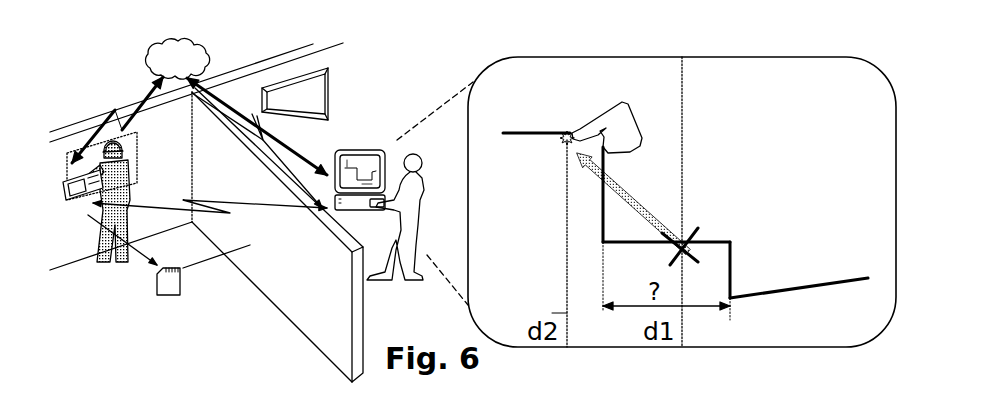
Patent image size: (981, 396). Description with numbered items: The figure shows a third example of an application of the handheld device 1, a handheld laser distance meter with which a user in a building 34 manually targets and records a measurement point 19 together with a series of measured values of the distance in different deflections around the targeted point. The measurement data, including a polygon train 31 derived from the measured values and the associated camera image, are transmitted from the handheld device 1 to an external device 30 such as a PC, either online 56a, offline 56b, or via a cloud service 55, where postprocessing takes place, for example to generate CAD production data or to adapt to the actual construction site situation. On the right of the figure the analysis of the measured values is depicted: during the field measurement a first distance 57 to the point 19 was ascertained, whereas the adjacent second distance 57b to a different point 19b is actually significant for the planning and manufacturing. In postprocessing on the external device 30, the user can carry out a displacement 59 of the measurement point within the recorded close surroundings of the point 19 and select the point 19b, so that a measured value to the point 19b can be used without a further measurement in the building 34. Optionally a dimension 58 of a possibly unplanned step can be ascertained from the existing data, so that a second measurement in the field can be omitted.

The handheld device 1 is at (76, 209).
The measurement point 19 is at (414, 203).
The different point 19b is at (527, 120).
The external device 30 is at (615, 188).
The polygon train 31 is at (801, 266).
The building 34 is at (106, 120).
The cloud service 55 is at (138, 58).
The online transmission 56a is at (210, 153).
The offline transmission 56b is at (164, 277).
The distance d1 57 is at (695, 318).
The distance d2 57b is at (524, 298).
The dimension 58 is at (697, 222).
The displacement 59 is at (625, 111).